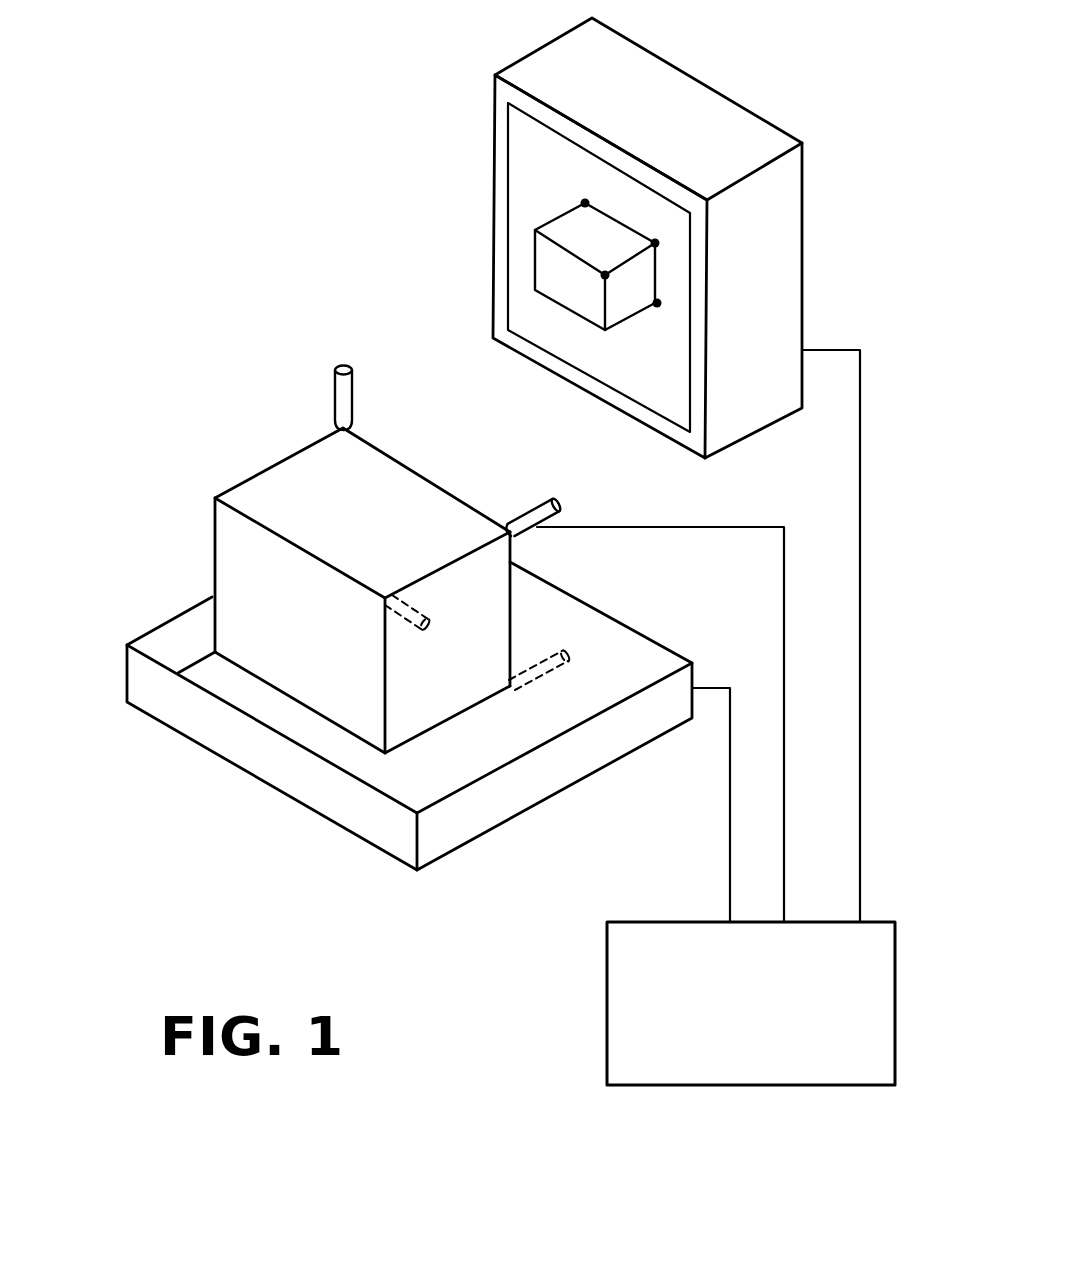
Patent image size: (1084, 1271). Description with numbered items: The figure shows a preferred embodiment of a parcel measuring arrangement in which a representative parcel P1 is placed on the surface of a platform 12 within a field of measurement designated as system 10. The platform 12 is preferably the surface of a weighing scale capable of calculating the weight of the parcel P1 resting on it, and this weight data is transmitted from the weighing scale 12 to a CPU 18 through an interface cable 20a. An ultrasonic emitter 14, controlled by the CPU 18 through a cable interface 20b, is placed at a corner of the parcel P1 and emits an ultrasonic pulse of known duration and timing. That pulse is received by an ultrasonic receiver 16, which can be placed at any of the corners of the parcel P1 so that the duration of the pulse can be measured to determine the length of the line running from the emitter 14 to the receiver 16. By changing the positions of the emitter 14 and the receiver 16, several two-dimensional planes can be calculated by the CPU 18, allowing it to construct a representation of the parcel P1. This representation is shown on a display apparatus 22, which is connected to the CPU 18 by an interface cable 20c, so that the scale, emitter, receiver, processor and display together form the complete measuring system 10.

The system 10 is at (258, 337).
The platform 12 is at (511, 794).
The ultrasonic emitter 14 is at (530, 510).
The ultrasonic receiver 16 is at (353, 393).
The CPU 18 is at (613, 1003).
The interface cable 20a is at (730, 860).
The cable interface 20b is at (783, 613).
The interface cable 20c is at (862, 517).
The display apparatus 22 is at (690, 78).
The parcel P1 is at (257, 495).